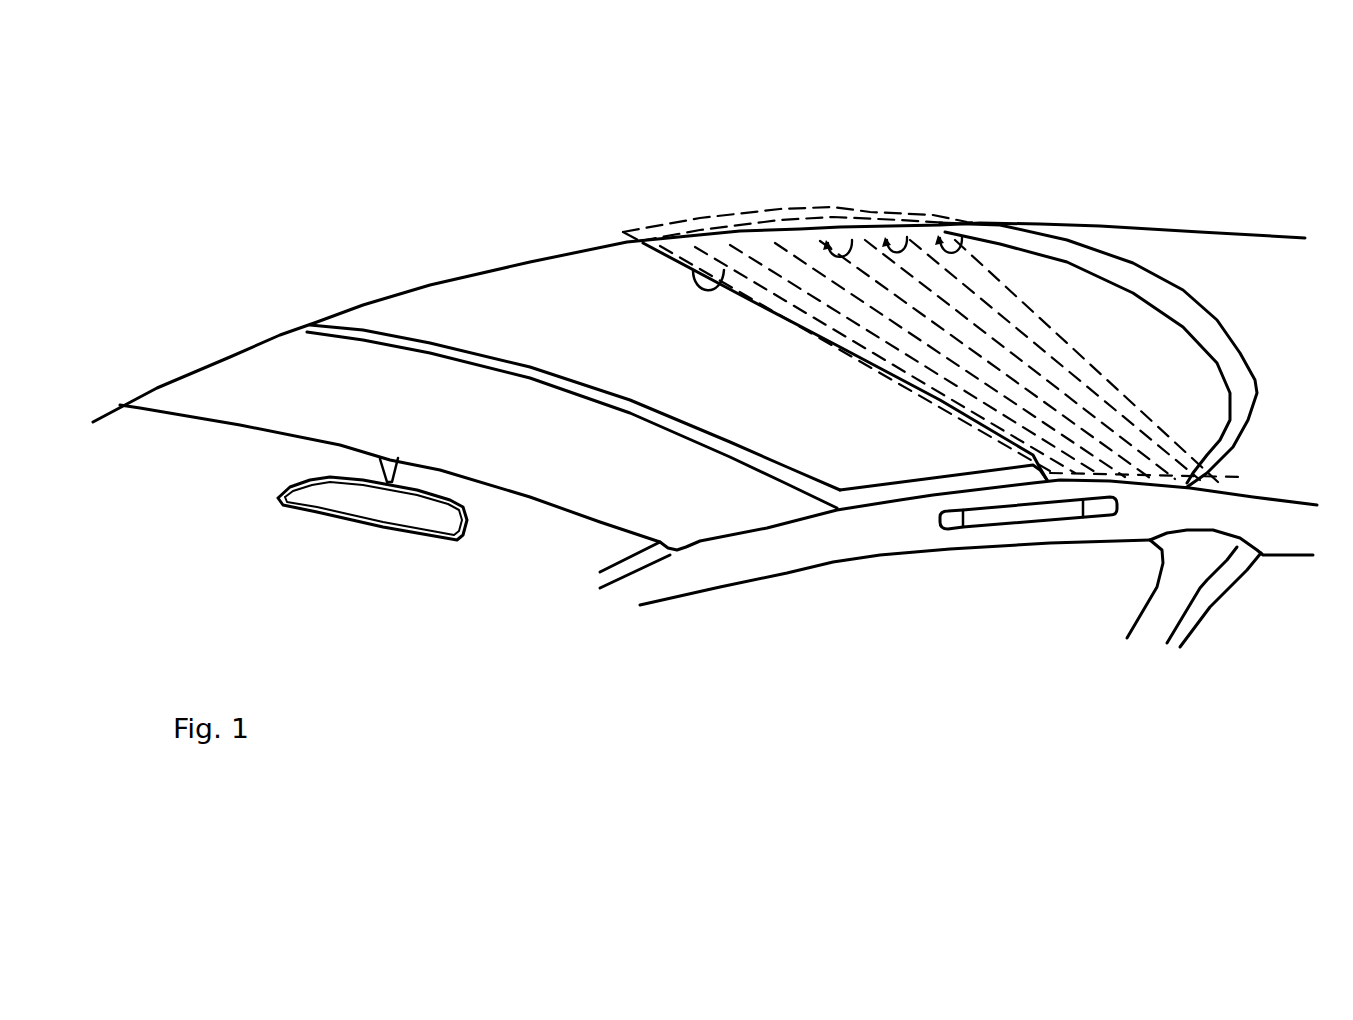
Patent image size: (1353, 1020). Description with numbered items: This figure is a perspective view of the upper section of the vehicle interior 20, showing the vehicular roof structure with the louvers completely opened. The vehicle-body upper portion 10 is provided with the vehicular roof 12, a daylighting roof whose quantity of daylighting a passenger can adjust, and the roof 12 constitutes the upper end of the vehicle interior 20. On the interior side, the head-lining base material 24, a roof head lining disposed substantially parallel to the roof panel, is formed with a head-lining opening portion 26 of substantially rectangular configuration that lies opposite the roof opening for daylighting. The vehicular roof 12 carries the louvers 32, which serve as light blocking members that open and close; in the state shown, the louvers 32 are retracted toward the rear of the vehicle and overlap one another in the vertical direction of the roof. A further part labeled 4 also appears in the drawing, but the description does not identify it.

The front pillar 4 is at (695, 523).
The vehicle-body upper portion 10 is at (828, 547).
The vehicular roof 12 is at (868, 526).
The vehicle interior 20 is at (907, 741).
The head-lining base material 24 is at (1113, 457).
The head-lining opening portion 26 is at (727, 283).
The louvers 32 is at (935, 222).